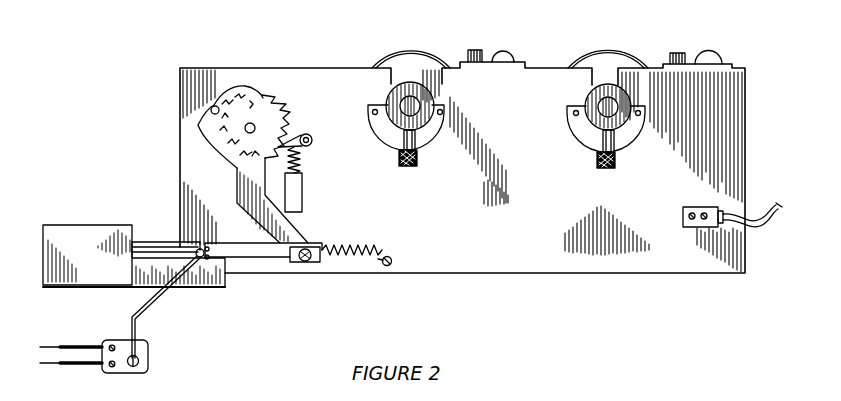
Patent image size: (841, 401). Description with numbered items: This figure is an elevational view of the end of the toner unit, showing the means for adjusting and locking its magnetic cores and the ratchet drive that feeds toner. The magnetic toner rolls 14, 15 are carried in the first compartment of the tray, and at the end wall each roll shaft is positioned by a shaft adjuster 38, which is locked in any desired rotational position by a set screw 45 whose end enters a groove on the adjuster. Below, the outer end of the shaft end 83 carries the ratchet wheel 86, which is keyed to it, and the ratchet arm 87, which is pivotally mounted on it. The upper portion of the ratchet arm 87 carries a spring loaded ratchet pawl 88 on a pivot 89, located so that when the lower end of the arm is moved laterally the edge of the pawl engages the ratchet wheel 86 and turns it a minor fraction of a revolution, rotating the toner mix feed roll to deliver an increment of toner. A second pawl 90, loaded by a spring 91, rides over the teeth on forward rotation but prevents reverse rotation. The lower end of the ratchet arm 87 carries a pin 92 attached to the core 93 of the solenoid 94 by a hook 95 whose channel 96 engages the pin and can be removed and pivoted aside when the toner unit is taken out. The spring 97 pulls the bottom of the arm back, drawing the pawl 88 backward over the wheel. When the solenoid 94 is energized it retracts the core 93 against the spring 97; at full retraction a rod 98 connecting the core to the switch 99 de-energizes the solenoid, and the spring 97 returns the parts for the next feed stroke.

The magnetic toner roll 14 is at (400, 44).
The magnetic toner roll 15 is at (594, 44).
The shaft adjuster 38 is at (588, 133).
The set screw 45 is at (408, 168).
The shaft end 83 is at (245, 127).
The ratchet wheel 86 is at (280, 116).
The ratchet arm 87 is at (236, 177).
The ratchet pawl 88 is at (215, 105).
The pivot 89 is at (198, 125).
The second pawl 90 is at (309, 134).
The spring 91 is at (301, 163).
The pin 92 is at (310, 262).
The solenoid core 93 is at (167, 242).
The solenoid 94 is at (75, 250).
The hook 95 is at (258, 259).
The channel 96 is at (295, 262).
The spring 97 is at (352, 262).
The rod 98 is at (153, 307).
The switch 99 is at (150, 360).